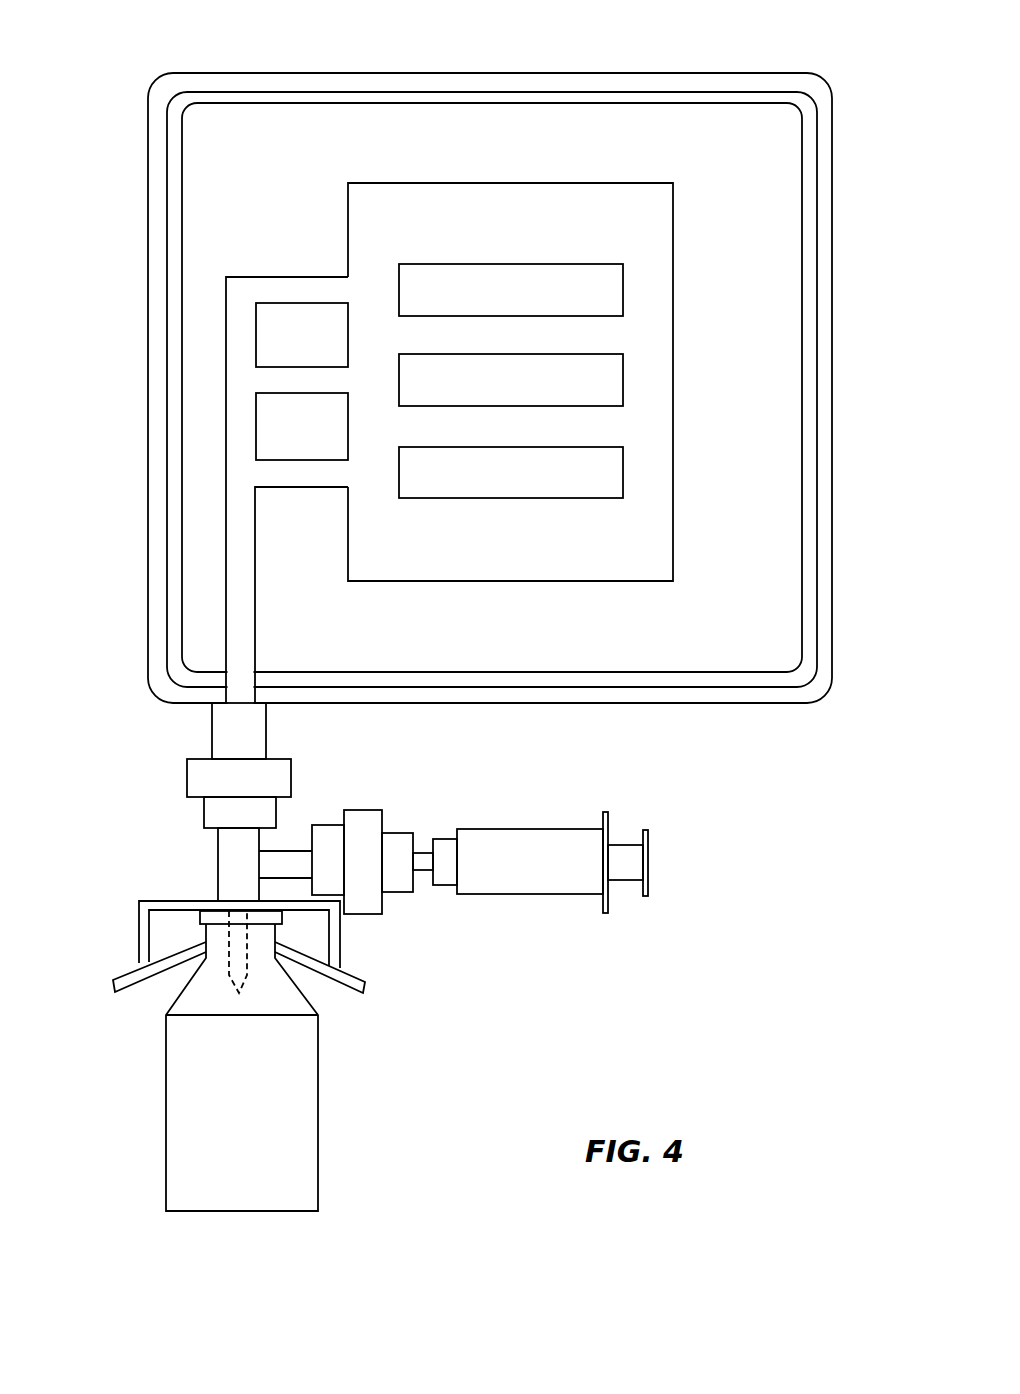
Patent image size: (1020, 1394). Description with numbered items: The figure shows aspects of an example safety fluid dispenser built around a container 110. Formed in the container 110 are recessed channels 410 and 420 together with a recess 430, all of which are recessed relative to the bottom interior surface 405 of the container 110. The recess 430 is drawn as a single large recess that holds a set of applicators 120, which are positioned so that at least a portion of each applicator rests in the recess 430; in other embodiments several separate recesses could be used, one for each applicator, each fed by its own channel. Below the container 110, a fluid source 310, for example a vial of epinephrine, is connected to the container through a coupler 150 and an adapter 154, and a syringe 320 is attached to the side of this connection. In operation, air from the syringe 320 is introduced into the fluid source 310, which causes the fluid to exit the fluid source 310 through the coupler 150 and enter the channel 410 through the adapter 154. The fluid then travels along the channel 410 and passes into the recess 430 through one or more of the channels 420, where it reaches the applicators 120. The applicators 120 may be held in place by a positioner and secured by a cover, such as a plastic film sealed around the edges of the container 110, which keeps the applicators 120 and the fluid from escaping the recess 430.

The container 110 is at (205, 83).
The bottom interior surface 405 is at (197, 185).
The recess 430 is at (445, 218).
The channel 410 is at (230, 556).
The channels 420 is at (277, 477).
The applicators 120 is at (585, 289).
The adapter 154 is at (210, 742).
The coupler 150 is at (217, 867).
The syringe 320 is at (525, 892).
The fluid source 310 is at (163, 1097).